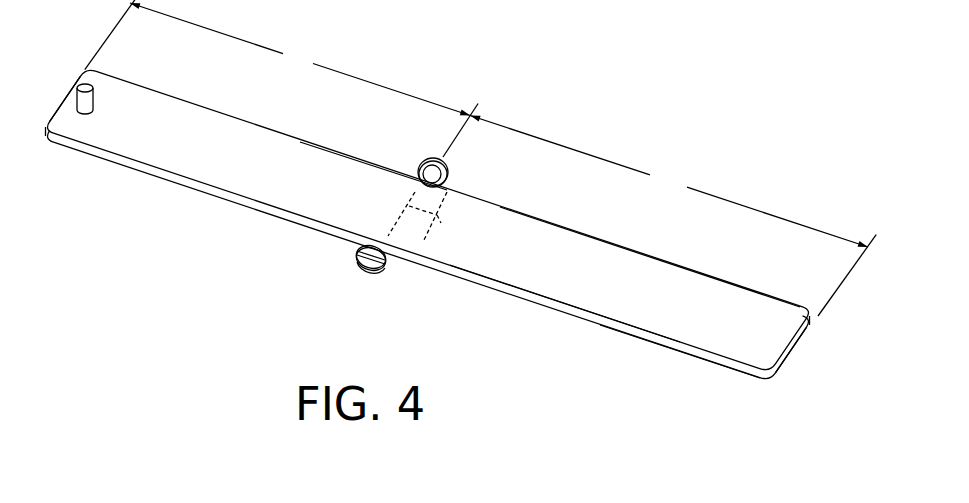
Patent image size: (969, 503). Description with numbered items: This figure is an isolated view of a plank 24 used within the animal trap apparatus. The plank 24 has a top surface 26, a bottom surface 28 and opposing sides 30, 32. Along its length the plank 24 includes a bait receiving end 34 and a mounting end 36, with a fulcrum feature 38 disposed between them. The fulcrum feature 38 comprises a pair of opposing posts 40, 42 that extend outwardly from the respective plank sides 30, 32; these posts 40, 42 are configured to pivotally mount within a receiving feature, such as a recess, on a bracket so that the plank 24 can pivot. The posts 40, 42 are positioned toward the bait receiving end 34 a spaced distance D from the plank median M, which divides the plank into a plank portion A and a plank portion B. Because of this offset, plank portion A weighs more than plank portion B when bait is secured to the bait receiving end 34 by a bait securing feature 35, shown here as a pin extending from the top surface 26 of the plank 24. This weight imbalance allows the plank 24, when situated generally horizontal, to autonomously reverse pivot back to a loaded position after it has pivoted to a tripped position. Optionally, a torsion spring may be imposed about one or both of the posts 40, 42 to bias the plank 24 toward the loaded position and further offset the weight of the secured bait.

The plank 24 is at (221, 243).
The top surface 26 is at (540, 235).
The bottom surface 28 is at (682, 355).
The side 30 is at (570, 313).
The side 32 is at (633, 249).
The bait receiving end 34 is at (57, 106).
The bait securing feature 35 is at (77, 105).
The mounting end 36 is at (790, 362).
The fulcrum feature 38 is at (365, 286).
The post 40 is at (353, 244).
The post 42 is at (420, 174).
The plank median M is at (427, 237).
The plank portion A is at (659, 210).
The plank portion B is at (277, 57).
The spaced distance D is at (447, 191).